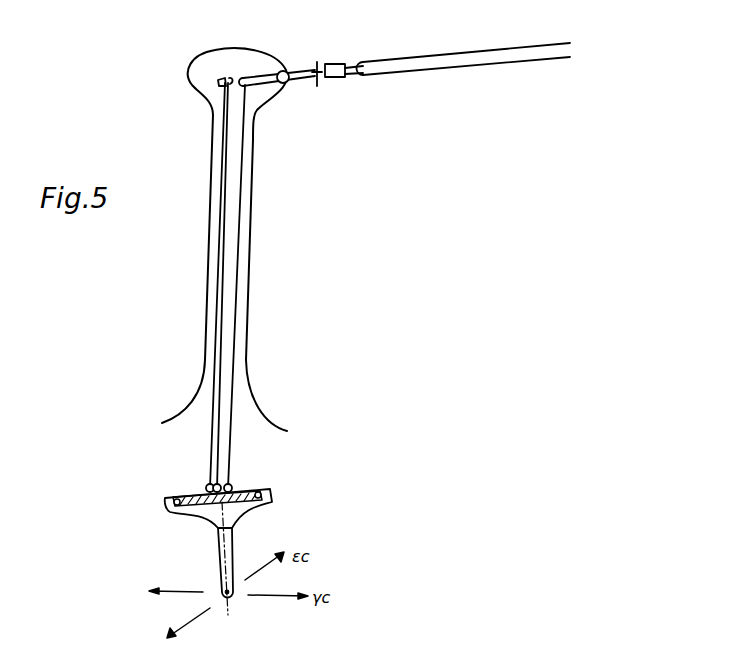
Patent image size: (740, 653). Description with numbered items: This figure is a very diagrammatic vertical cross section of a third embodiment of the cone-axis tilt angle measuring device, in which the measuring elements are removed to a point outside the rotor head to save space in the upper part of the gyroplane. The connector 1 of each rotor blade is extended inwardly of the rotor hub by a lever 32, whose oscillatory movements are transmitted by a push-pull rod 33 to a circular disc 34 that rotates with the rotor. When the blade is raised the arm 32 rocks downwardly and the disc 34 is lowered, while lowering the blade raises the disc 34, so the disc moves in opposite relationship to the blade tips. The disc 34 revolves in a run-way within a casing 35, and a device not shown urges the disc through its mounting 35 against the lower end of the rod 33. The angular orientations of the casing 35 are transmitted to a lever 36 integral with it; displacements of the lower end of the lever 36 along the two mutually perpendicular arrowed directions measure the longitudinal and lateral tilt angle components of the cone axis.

The connector 1 is at (298, 73).
The lever 32 is at (265, 78).
The push-pull rod 33 is at (223, 170).
The circular disc 34 is at (247, 492).
The casing 35 is at (272, 497).
The lever 36 is at (237, 537).